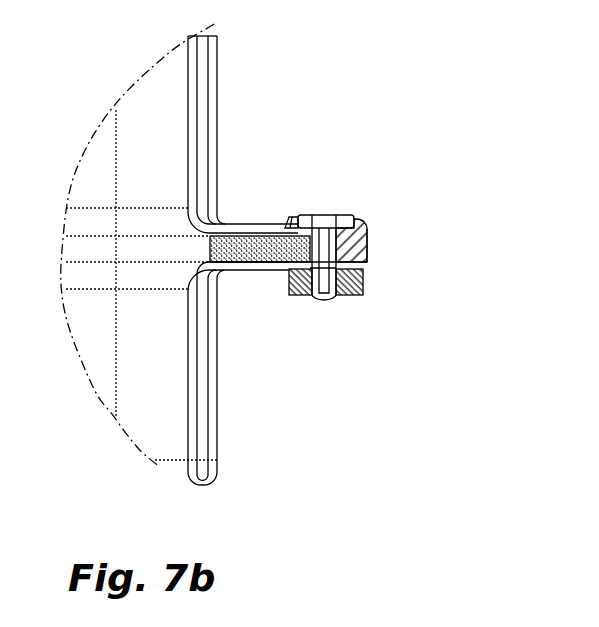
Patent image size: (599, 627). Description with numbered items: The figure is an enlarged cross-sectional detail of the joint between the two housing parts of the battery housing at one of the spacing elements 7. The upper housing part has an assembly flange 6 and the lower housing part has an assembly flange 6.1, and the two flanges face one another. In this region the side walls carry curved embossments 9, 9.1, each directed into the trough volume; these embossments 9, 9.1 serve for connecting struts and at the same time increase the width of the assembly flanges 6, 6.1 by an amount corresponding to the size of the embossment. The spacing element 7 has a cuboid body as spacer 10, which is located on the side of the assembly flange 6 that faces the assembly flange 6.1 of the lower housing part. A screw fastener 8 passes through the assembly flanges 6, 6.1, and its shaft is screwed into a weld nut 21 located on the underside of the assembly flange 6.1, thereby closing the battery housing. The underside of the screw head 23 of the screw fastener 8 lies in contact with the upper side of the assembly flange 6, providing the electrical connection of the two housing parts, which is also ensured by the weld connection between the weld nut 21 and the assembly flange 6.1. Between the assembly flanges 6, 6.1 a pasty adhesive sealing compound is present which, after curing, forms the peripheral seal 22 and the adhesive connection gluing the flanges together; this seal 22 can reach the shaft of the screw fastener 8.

The curved embossment 9 is at (196, 92).
The curved embossment 9.1 is at (199, 355).
The assembly flange 6 is at (258, 225).
The assembly flange 6.1 is at (262, 273).
The seal 22 is at (263, 232).
The screw head 23 is at (315, 210).
The screw fastener 8 is at (342, 202).
The spacing element 7 is at (373, 238).
The spacer 10 is at (368, 258).
The weld nut 21 is at (364, 288).